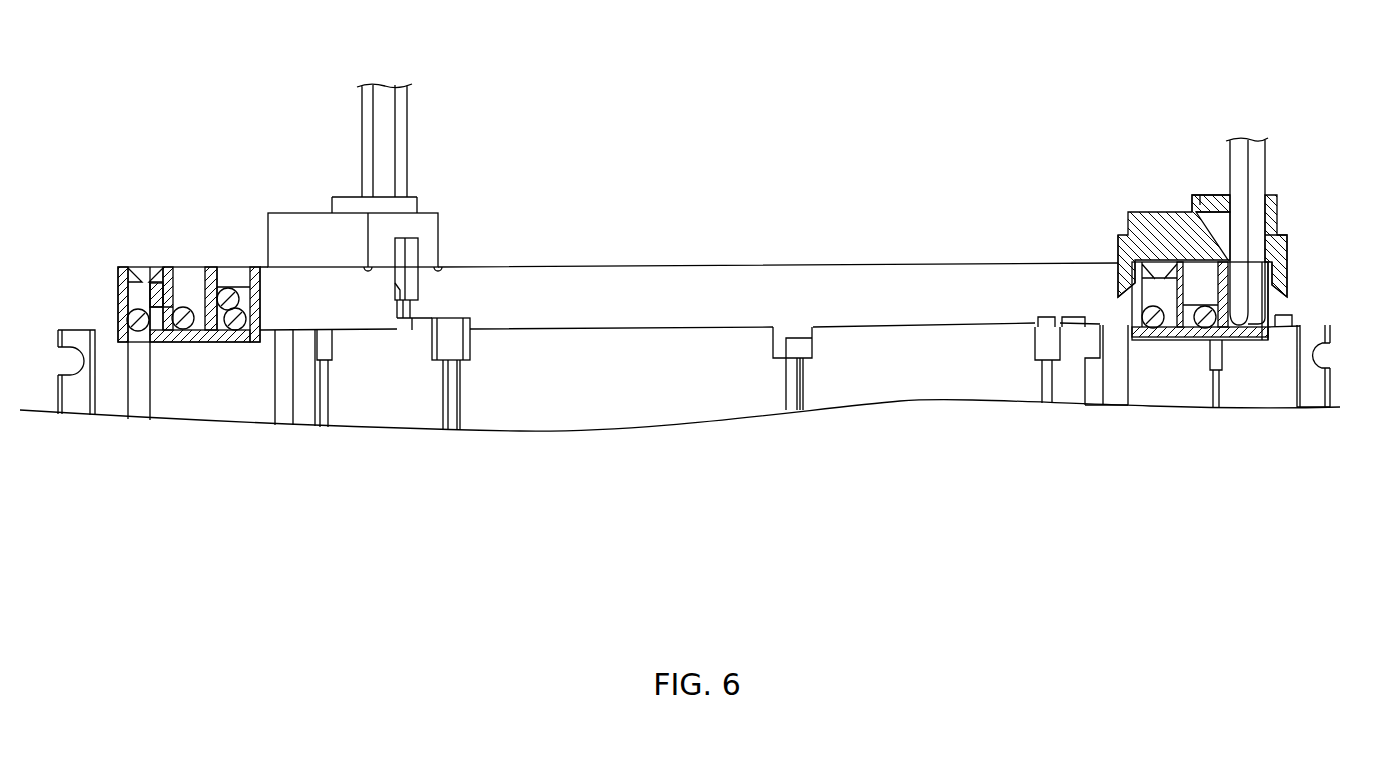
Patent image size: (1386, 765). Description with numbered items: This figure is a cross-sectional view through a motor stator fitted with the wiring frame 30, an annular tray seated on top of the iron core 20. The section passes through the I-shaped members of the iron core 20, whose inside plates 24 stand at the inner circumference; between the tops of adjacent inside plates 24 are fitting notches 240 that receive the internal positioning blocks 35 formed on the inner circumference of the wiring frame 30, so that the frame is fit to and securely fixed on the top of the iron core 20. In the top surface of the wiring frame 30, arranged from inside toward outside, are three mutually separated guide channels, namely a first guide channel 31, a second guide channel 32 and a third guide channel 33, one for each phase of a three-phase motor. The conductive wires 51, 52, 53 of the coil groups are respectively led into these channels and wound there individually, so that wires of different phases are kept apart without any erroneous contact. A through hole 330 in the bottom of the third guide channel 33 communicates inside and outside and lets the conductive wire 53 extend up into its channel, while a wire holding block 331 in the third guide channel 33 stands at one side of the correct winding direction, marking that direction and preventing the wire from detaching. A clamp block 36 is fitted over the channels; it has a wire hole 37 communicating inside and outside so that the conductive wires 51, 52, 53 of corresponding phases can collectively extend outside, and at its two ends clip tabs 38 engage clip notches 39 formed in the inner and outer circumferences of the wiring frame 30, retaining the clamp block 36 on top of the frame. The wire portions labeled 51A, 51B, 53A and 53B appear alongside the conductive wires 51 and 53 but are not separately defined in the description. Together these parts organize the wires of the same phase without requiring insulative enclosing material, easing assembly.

The iron core 20 is at (437, 428).
The inside plate 24 is at (612, 405).
The fitting notch 240 is at (470, 345).
The wiring frame 30 is at (688, 275).
The first guide channel 31 is at (230, 277).
The second guide channel 32 is at (193, 283).
The third guide channel 33 is at (138, 297).
The through hole 330 is at (152, 340).
The wire holding block 331 is at (135, 272).
The internal positioning block 35 is at (468, 328).
The clamp block 36 is at (1150, 218).
The wire hole 37 is at (412, 203).
The clip tab 38 is at (410, 257).
The clip notch 39 is at (397, 312).
The conductive wire 51 is at (1153, 328).
The upper roller 51A is at (247, 320).
The lower roller 51B is at (213, 335).
The conductive wire 52 is at (1200, 328).
The conductive wire 53 is at (132, 320).
The guide rod 53A is at (1230, 162).
The guide sleeve 53B is at (1258, 170).